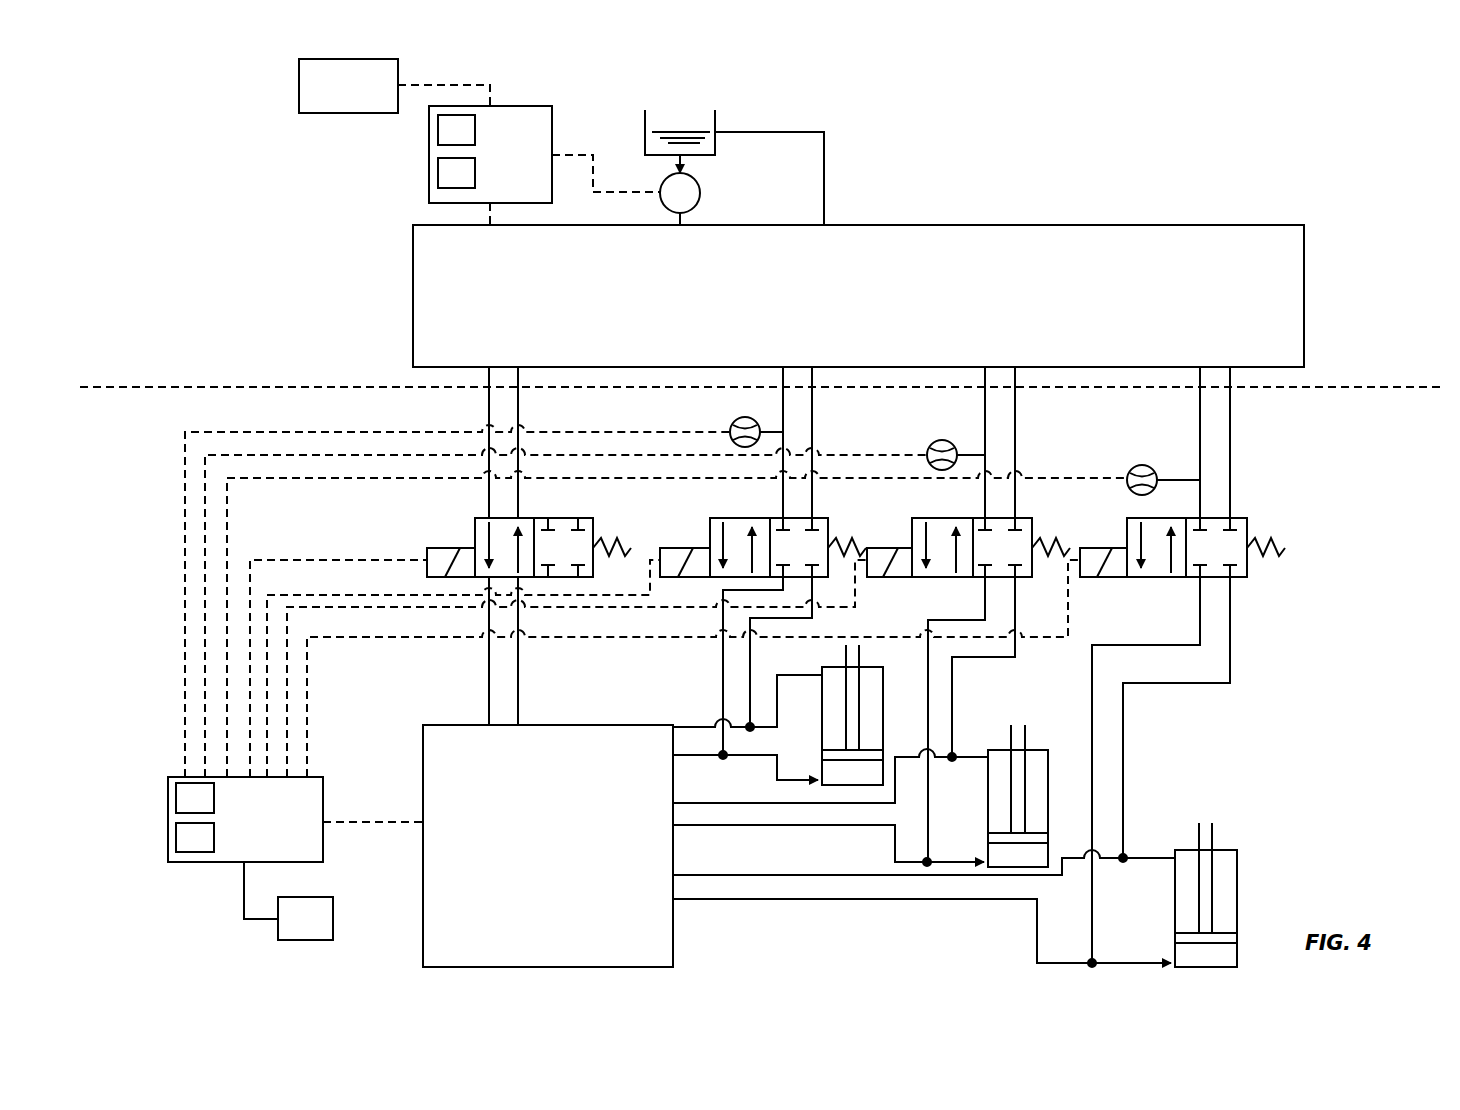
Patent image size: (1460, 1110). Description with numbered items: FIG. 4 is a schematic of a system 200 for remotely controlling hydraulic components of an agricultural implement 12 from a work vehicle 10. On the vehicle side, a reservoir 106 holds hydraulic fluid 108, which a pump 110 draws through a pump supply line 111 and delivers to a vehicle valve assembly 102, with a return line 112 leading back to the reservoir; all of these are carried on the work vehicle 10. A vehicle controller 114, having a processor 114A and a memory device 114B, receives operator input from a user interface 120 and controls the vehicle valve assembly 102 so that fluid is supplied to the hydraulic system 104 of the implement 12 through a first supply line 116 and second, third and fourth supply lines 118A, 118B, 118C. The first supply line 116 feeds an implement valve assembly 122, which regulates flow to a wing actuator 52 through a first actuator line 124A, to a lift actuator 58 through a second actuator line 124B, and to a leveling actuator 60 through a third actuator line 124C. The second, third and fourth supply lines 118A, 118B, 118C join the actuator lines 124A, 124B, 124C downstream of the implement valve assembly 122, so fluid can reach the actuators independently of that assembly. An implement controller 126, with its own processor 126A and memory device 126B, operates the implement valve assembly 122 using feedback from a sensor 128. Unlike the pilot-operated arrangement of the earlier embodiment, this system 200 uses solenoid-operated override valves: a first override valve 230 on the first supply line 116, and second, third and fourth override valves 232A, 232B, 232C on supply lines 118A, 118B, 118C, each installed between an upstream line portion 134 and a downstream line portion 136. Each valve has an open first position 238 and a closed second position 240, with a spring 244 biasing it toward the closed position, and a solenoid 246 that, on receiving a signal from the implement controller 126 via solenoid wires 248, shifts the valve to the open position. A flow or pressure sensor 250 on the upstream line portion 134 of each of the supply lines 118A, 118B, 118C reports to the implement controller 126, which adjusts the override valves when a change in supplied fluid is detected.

The work vehicle 10 is at (178, 278).
The implement 12 is at (105, 508).
The wing actuator 52 is at (820, 730).
The lift actuator 58 is at (1000, 765).
The leveling actuator 60 is at (1248, 862).
The vehicle valve assembly 102 is at (858, 296).
The hydraulic system 104 is at (1408, 525).
The reservoir 106 is at (720, 118).
The hydraulic fluid 108 is at (680, 140).
The pump 110 is at (700, 193).
The pump supply line 111 is at (685, 165).
The return line 112 is at (824, 170).
The vehicle controller 114 is at (537, 135).
The processor 114A is at (448, 125).
The memory device 114B is at (448, 177).
The first supply line 116 is at (480, 668).
The second supply line 118A is at (712, 665).
The third supply line 118B is at (978, 600).
The fourth supply line 118C is at (1190, 600).
The user interface 120 is at (325, 92).
The implement valve assembly 122 is at (548, 846).
The first actuator line 124A is at (700, 758).
The second actuator line 124B is at (700, 828).
The third actuator line 124C is at (848, 902).
The implement controller 126 is at (305, 808).
The processor 126A is at (183, 800).
The memory device 126B is at (183, 838).
The sensor 128 is at (305, 930).
The upstream line portion 134 is at (489, 403).
The downstream line portion 136 is at (489, 690).
The system 200 is at (1172, 155).
The first solenoid-operated override valve 230 is at (543, 510).
The second solenoid-operated override valve 232A is at (768, 510).
The third solenoid-operated override valve 232B is at (1010, 510).
The fourth solenoid-operated override valve 232C is at (1226, 510).
The first position 238 is at (485, 525).
The second position 240 is at (587, 522).
The spring 244 is at (615, 560).
The solenoid 246 is at (430, 552).
The solenoid wires 248 is at (335, 637).
The sensor 250 is at (735, 420).